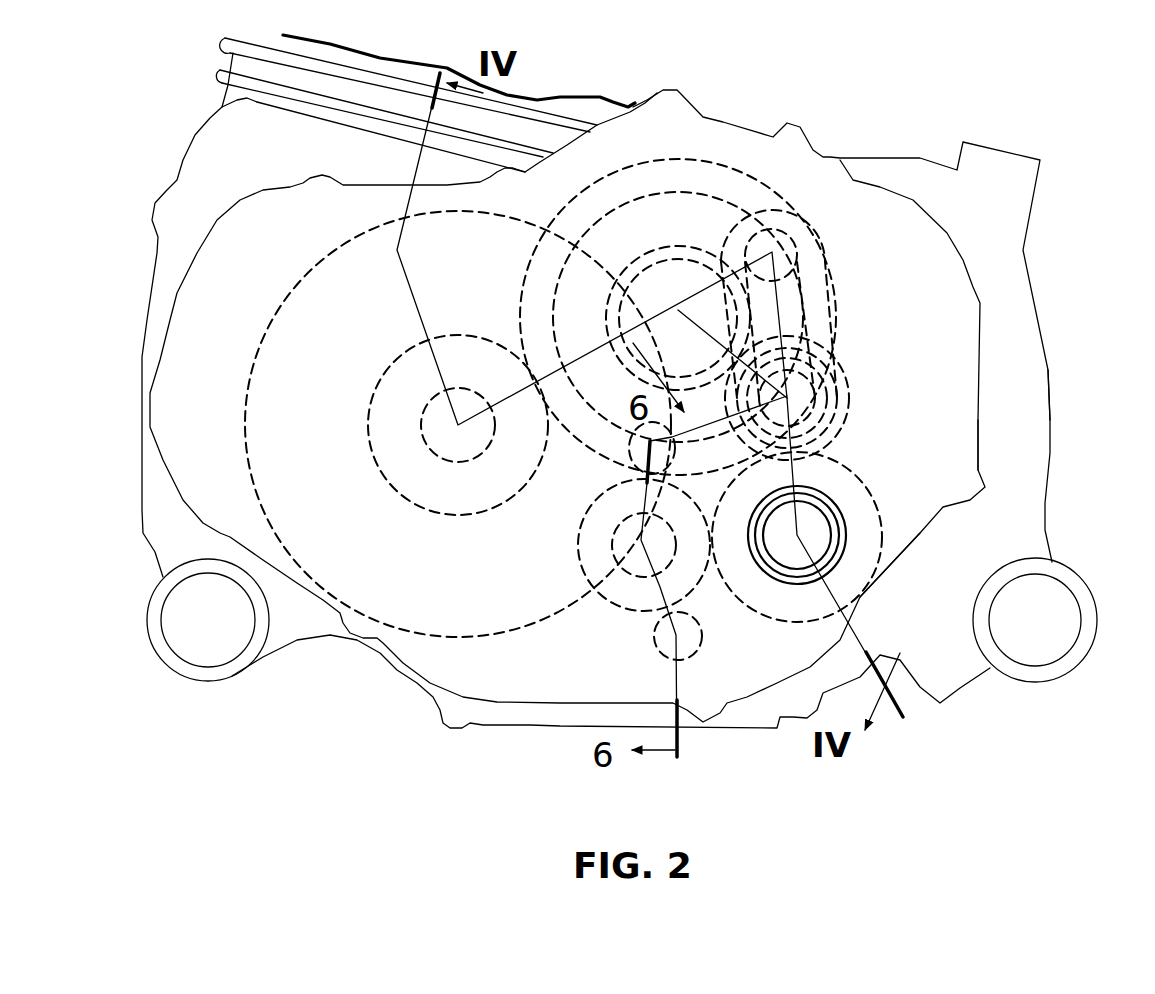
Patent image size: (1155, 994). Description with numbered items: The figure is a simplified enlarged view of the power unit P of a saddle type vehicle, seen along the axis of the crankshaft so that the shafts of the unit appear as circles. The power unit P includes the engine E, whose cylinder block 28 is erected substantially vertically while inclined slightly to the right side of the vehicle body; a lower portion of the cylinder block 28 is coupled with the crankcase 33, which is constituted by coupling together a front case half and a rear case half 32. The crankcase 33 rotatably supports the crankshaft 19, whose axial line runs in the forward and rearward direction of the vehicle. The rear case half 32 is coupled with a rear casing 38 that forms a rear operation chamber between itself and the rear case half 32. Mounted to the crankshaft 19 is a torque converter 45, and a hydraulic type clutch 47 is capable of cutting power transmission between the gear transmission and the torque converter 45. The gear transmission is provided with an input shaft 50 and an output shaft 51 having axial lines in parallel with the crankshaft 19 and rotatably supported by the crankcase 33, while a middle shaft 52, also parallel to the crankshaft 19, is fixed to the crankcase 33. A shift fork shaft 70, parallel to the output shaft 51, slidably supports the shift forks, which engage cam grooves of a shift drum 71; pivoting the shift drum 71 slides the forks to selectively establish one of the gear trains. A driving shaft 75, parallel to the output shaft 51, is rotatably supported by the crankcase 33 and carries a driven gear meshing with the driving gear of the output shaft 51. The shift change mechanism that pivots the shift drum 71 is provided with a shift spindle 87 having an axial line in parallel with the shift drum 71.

The crankshaft 19 is at (440, 512).
The cylinder block 28 is at (237, 52).
The rear case half 32 is at (1040, 433).
The crankcase 33 is at (1055, 375).
The rear casing 38 is at (913, 530).
The torque converter 45 is at (272, 303).
The hydraulic type clutch 47 is at (706, 155).
The input shaft 50 is at (772, 193).
The output shaft 51 is at (850, 358).
The middle shaft 52 is at (817, 250).
The shift fork shaft 70 is at (630, 470).
The shift drum 71 is at (580, 525).
The driving shaft 75 is at (820, 523).
The shift spindle 87 is at (700, 655).
The engine E is at (212, 94).
The power unit P is at (400, 680).